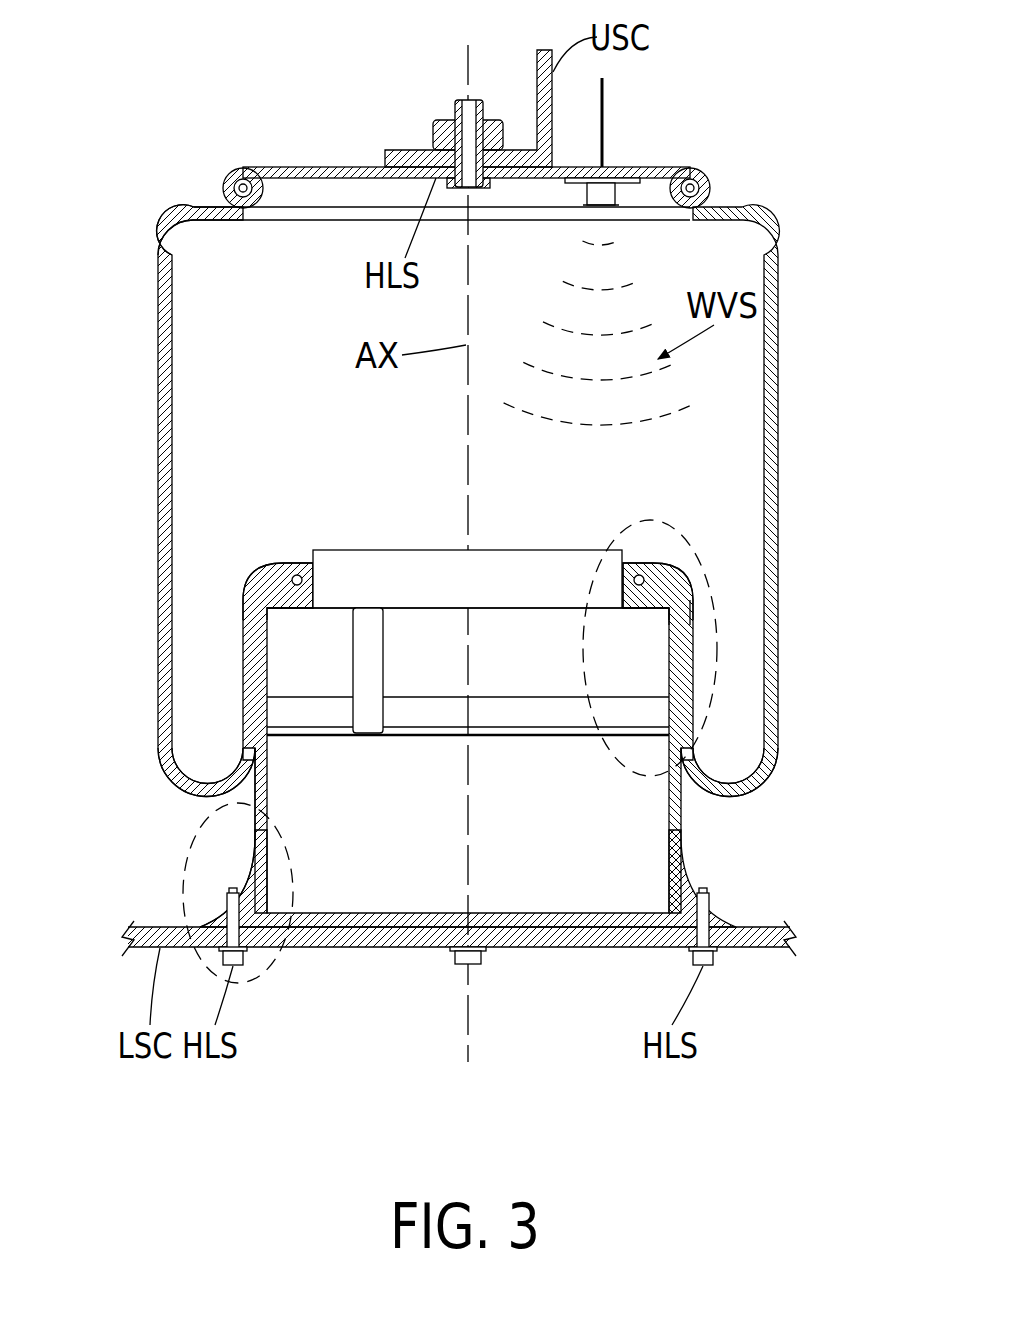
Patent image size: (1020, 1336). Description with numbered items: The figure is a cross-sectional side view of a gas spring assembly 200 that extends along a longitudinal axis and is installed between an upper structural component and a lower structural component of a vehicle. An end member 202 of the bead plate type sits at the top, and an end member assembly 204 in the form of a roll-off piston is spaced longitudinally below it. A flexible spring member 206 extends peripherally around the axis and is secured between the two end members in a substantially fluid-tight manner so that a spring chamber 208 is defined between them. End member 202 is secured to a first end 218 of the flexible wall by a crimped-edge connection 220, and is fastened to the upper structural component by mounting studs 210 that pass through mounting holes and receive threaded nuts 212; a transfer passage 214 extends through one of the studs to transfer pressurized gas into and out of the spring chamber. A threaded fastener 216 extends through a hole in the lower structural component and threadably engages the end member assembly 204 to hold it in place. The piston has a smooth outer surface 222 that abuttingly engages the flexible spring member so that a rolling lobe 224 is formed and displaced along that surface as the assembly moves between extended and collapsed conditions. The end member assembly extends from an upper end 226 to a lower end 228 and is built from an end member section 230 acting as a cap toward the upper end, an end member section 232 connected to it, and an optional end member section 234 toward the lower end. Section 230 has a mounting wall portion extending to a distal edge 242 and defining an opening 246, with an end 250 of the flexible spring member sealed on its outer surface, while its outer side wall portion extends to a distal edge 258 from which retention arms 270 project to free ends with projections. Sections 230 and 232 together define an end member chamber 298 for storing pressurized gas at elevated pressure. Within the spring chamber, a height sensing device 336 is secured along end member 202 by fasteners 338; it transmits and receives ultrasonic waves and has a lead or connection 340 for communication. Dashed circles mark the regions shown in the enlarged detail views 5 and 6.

The gas spring assembly 200 is at (826, 217).
The end member 202 is at (311, 163).
The end member assembly 204 is at (698, 822).
The flexible spring member 206 is at (780, 380).
The spring chamber 208 is at (214, 364).
The mounting stud 210 is at (450, 110).
The threaded nut 212 is at (437, 125).
The transfer passage 214 is at (464, 96).
The threaded fastener 216 is at (246, 962).
The first end of flexible wall 218 is at (242, 232).
The crimped-edge connection 220 is at (228, 190).
The outer surface 222 is at (698, 862).
The rolling lobe 224 is at (727, 793).
The upper end 226 is at (212, 632).
The lower end 228 is at (150, 890).
The end member section 230 is at (681, 603).
The end member section 232 is at (248, 755).
The end member section 234 is at (240, 867).
The distal edge 242 is at (516, 548).
The opening 246 is at (390, 583).
The end of flexible spring member 250 is at (258, 562).
The distal surface or edge 258 is at (511, 698).
The retention arm 270 is at (372, 688).
The end member chamber 298 is at (387, 882).
The height sensing device 336 is at (578, 202).
The fastener 338 is at (626, 187).
The lead or connection 340 is at (606, 95).
The detail view 5 is at (708, 578).
The detail view 6 is at (186, 872).